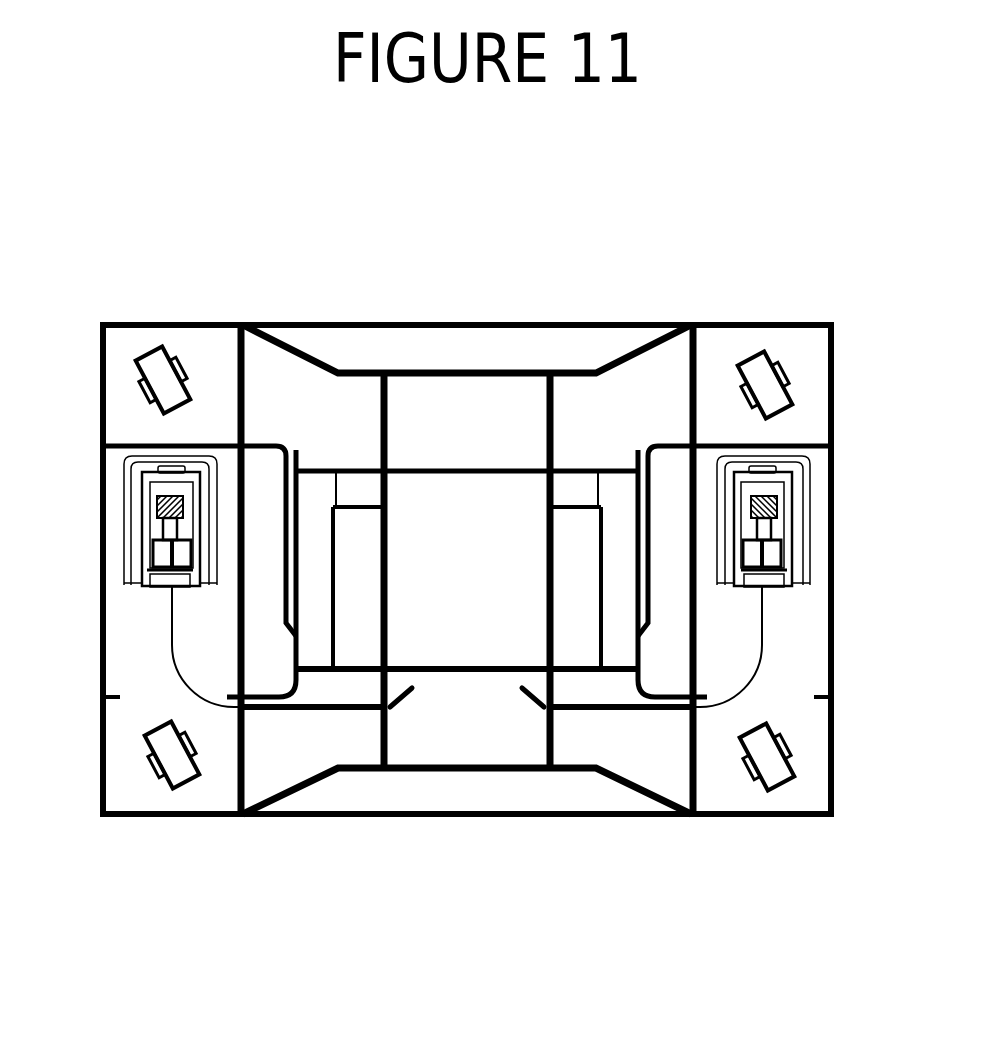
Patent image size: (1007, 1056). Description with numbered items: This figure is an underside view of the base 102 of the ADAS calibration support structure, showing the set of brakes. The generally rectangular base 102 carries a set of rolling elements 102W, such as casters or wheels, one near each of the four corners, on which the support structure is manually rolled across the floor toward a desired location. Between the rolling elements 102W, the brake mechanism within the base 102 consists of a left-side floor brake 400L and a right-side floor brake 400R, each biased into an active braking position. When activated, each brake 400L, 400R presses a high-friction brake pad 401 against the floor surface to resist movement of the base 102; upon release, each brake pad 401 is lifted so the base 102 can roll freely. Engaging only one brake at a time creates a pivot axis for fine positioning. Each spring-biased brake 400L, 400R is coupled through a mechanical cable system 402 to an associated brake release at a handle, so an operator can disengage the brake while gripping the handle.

The base 102 is at (463, 291).
The rolling elements 102W is at (180, 353).
The right-side floor brake 400R is at (181, 495).
The left-side floor brake 400L is at (773, 490).
The high-friction brake pad 401 is at (151, 525).
The mechanical cable system 402 is at (323, 713).